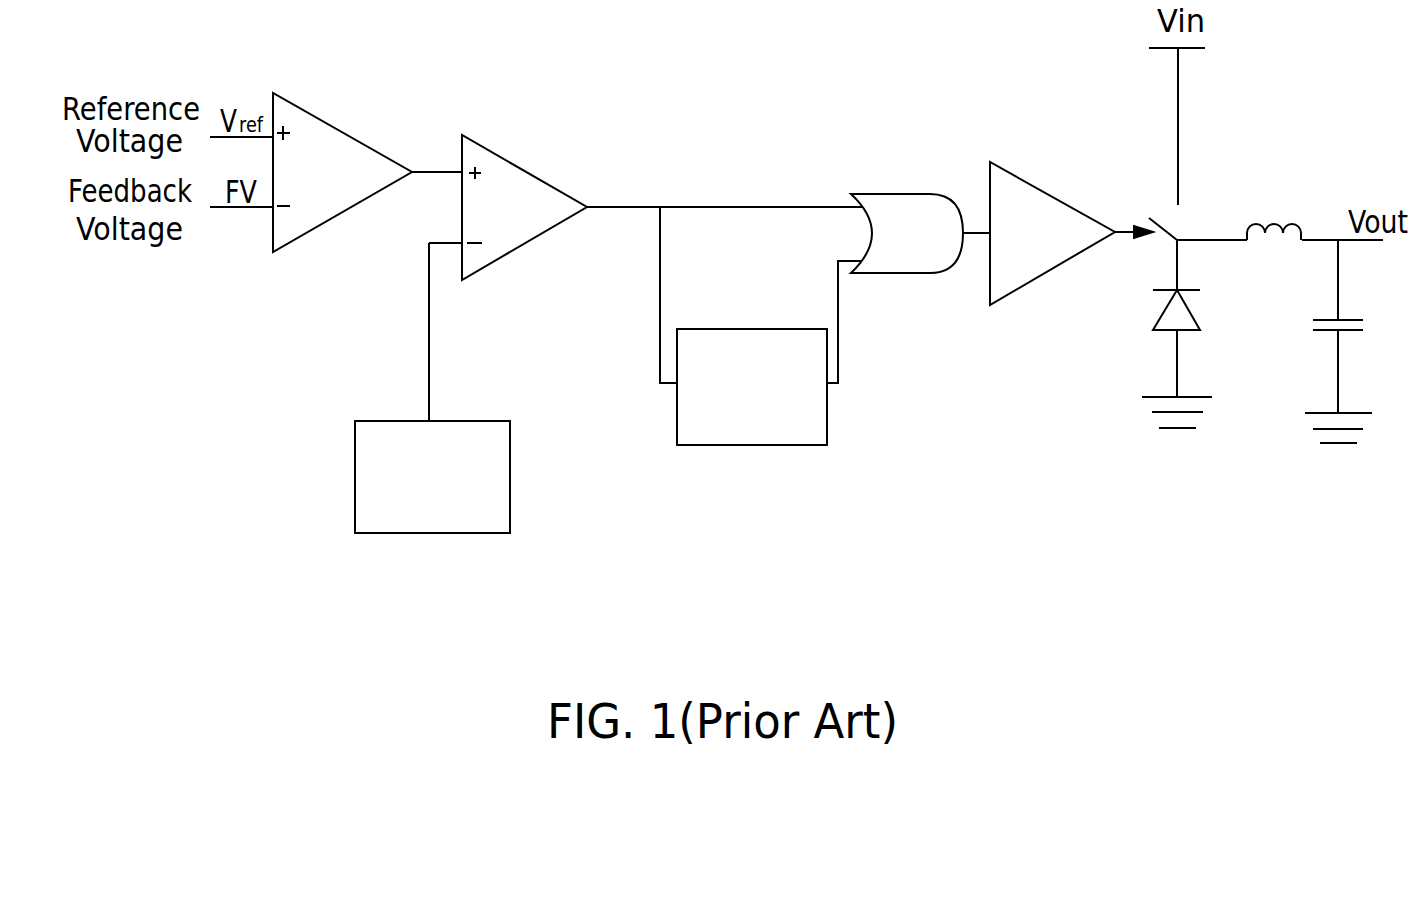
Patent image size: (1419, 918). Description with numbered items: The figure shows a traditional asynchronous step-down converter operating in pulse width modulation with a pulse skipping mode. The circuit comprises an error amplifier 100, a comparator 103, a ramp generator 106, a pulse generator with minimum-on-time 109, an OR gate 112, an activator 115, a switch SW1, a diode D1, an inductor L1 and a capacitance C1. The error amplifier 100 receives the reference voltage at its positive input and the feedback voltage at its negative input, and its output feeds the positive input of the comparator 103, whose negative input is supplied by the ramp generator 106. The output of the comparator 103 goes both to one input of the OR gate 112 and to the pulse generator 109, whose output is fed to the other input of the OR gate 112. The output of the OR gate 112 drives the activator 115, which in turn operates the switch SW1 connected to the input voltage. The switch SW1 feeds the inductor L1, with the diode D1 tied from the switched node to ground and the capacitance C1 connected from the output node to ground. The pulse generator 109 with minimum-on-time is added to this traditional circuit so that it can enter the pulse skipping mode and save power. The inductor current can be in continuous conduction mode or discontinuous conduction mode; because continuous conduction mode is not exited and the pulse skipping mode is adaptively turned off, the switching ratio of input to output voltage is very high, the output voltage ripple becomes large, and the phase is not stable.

The error amplifier 100 is at (320, 112).
The comparator 103 is at (492, 148).
The ramp generator 106 is at (453, 525).
The pulse generator with minimum-on-time 109 is at (775, 436).
The OR gate 112 is at (930, 271).
The activator 115 is at (1048, 185).
The switch SW1 is at (1192, 213).
The inductor L1 is at (1274, 211).
The diode D1 is at (1183, 334).
The capacitance C1 is at (1351, 341).